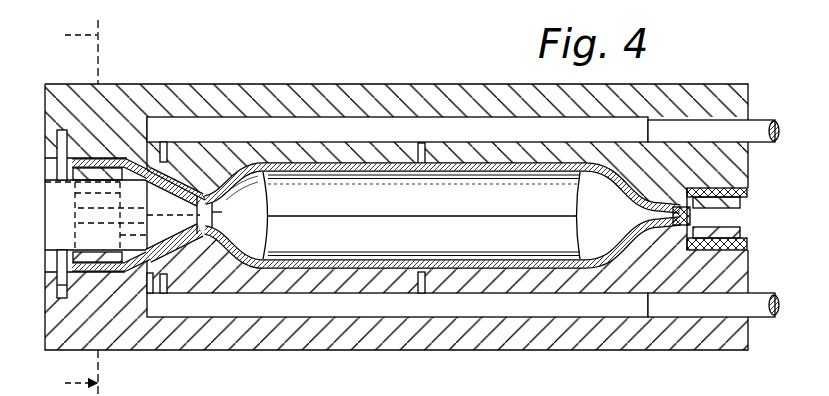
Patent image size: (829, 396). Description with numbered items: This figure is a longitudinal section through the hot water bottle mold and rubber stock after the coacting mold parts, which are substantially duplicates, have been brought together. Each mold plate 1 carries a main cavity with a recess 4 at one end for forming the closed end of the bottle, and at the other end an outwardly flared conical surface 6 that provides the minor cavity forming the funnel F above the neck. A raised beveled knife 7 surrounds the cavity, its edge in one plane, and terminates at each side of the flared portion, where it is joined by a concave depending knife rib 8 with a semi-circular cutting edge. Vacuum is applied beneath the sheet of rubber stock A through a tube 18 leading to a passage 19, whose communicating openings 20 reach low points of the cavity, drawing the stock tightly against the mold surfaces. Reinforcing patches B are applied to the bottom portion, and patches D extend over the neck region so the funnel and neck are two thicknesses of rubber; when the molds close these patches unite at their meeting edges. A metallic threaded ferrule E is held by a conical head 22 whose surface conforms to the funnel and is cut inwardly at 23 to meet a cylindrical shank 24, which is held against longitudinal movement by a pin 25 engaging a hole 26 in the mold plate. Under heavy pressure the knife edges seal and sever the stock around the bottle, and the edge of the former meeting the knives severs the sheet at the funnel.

The mold plate 1 is at (748, 166).
The recess 4 is at (745, 193).
The outwardly flared conical surface 6 is at (71, 208).
The knife 7 is at (700, 216).
The concave depending knife rib 8 is at (147, 276).
The tube 18 is at (713, 219).
The passage 19 is at (397, 217).
The communicating openings 20 is at (176, 290).
The conical head 22 is at (136, 215).
The inwardly cut surface 23 is at (141, 237).
The cylindrical shank 24 is at (122, 216).
The pin 25 is at (58, 266).
The hole 26 is at (58, 293).
The rubber stock A is at (442, 215).
The patches B is at (581, 237).
The patches D is at (252, 200).
The ferrule E is at (215, 223).
The funnel F is at (180, 183).